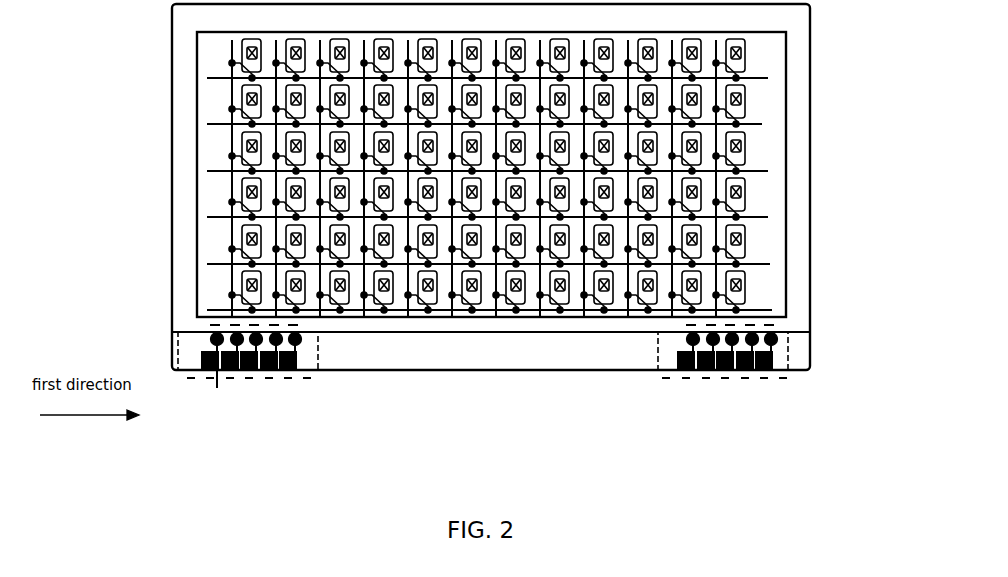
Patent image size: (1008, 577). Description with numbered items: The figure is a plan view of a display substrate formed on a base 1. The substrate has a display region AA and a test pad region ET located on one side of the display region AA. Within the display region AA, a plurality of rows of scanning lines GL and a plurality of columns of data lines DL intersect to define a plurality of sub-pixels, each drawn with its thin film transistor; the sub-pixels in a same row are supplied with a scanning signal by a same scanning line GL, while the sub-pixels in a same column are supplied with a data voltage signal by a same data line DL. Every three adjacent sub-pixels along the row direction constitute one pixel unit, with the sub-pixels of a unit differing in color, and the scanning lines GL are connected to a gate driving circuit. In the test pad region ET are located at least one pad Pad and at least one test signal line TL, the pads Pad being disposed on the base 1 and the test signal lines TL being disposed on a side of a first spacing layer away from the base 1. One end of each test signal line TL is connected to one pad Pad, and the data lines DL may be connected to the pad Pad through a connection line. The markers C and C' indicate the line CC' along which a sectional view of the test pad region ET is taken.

The base 1 is at (812, 338).
The display region AA is at (767, 62).
The scanning line GL is at (763, 125).
The data line DL is at (231, 105).
The test pad region ET is at (190, 343).
The pad Pad is at (301, 338).
The test signal line TL is at (318, 372).
The line CC' C is at (191, 391).
The line CC' C' is at (220, 374).